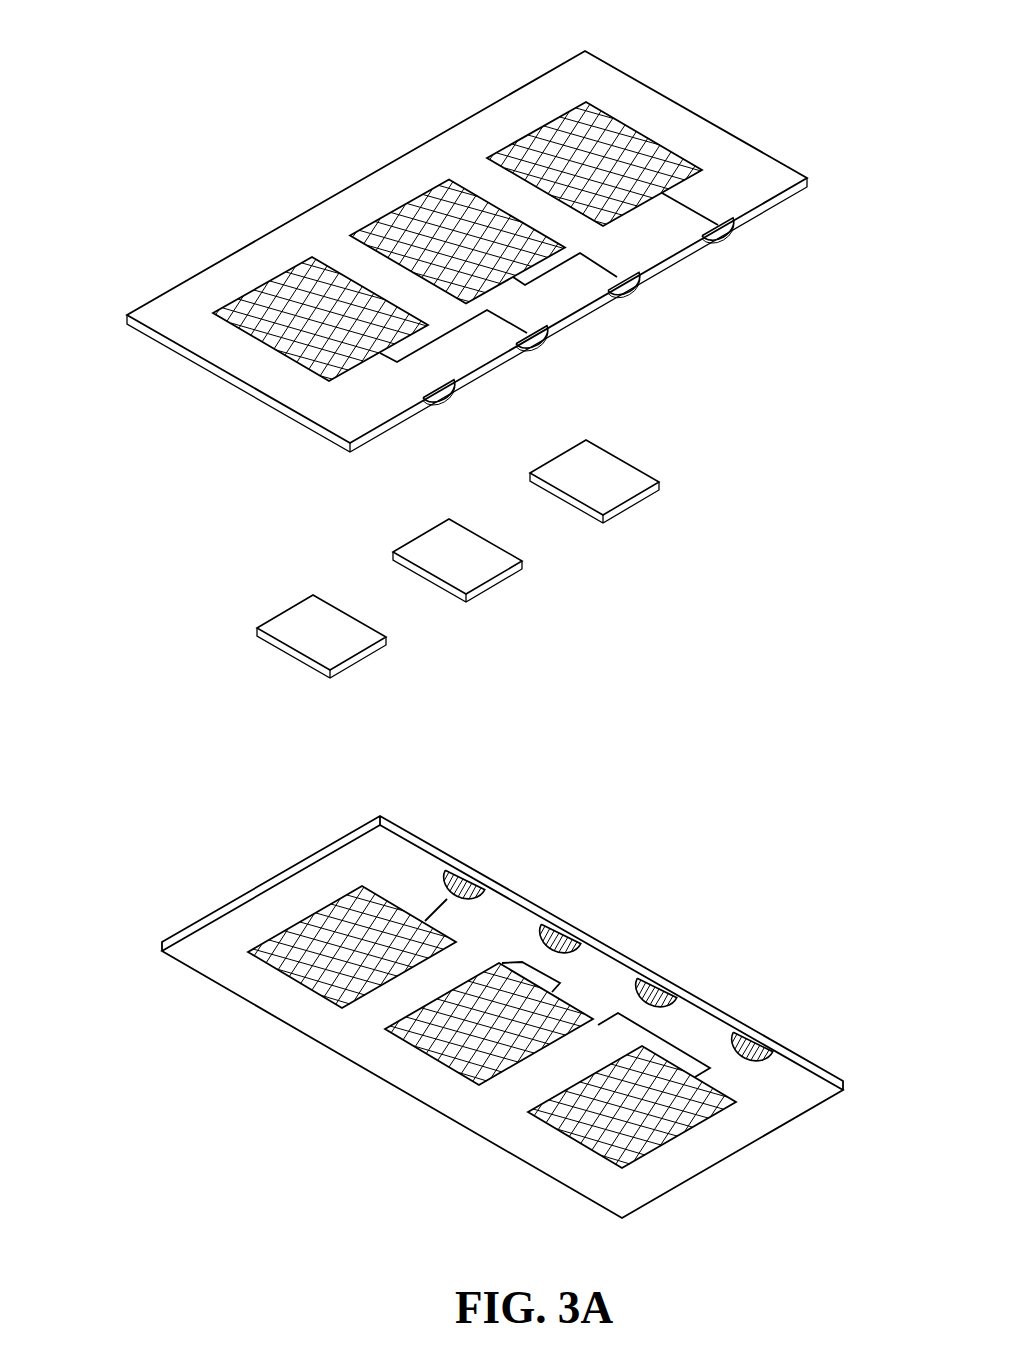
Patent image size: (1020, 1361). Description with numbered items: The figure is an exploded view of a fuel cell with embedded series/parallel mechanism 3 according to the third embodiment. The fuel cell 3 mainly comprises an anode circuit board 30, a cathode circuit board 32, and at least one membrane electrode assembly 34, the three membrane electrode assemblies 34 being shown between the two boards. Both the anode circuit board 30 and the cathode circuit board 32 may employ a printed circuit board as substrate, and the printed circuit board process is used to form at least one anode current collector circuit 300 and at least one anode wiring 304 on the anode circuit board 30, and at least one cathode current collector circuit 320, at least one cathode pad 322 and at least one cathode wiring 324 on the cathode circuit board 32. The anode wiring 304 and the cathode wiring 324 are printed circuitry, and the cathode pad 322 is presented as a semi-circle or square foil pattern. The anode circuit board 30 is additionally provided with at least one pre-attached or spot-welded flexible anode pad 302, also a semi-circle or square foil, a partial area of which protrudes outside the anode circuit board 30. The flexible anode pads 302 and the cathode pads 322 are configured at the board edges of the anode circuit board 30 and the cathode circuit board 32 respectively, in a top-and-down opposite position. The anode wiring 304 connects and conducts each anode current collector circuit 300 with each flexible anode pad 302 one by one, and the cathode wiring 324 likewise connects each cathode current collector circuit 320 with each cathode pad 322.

The fuel cell with embedded series/parallel mechanism 3 is at (213, 92).
The anode circuit board 30 is at (205, 381).
The anode current collector circuit 300 is at (300, 305).
The flexible anode pad 302 is at (447, 395).
The anode wiring 304 is at (385, 363).
The cathode circuit board 32 is at (258, 858).
The cathode current collector circuit 320 is at (340, 968).
The cathode pad 322 is at (468, 870).
The cathode wiring 324 is at (420, 905).
The membrane electrode assembly 34 is at (313, 647).